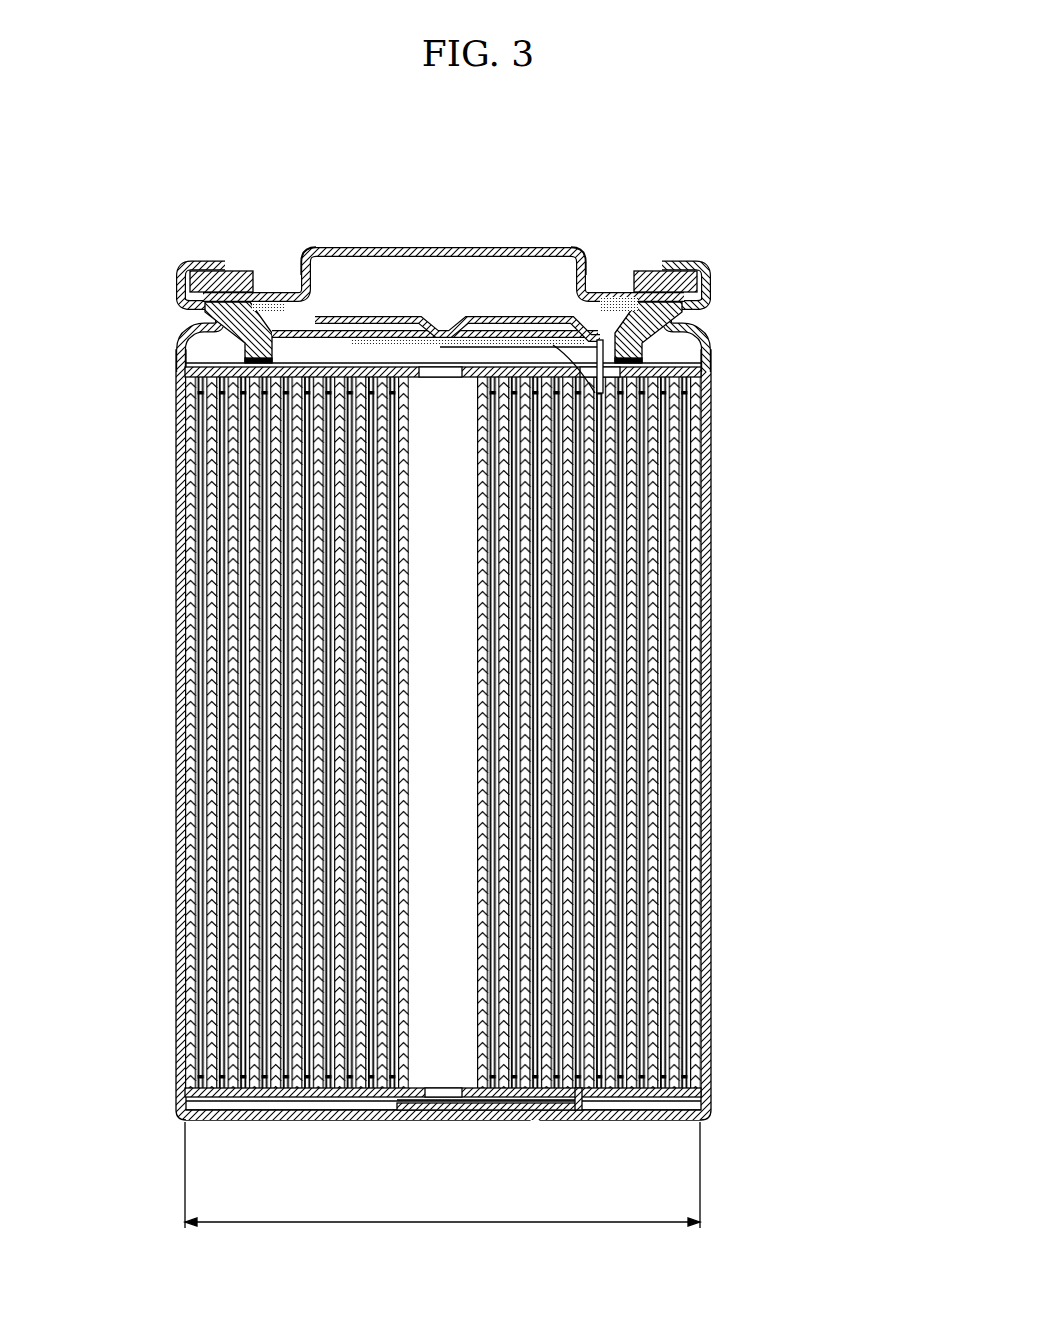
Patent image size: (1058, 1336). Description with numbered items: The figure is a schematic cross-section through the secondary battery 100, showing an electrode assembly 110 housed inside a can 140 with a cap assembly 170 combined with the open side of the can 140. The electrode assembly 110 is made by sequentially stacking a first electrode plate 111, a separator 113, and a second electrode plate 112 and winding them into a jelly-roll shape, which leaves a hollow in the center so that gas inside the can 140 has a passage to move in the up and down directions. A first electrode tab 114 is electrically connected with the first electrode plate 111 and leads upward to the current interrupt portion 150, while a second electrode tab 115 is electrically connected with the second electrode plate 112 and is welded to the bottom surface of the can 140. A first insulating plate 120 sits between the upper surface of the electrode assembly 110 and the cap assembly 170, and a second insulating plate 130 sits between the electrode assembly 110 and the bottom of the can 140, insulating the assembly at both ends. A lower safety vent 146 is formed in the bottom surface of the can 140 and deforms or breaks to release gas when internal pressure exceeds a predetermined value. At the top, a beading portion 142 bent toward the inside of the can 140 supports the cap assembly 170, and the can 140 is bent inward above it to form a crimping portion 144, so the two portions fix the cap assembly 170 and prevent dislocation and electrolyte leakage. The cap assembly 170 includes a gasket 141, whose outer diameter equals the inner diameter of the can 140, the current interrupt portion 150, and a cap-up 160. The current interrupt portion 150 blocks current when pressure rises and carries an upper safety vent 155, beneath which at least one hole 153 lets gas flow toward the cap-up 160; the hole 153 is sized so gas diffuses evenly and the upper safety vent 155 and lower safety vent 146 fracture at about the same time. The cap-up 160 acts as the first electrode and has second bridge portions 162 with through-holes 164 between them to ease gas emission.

The secondary battery 100 is at (783, 157).
The electrode assembly 110 is at (512, 732).
The first electrode plate 111 is at (683, 441).
The second electrode plate 112 is at (643, 541).
The separator 113 is at (482, 732).
The first electrode tab 114 is at (600, 393).
The second electrode tab 115 is at (436, 1123).
The first insulating plate 120 is at (703, 372).
The second insulating plate 130 is at (706, 1093).
The can 140 is at (456, 693).
The gasket 141 is at (190, 291).
The beading portion 142 is at (190, 328).
The crimping portion 144 is at (203, 262).
The lower safety vent 146 is at (537, 1123).
The current interrupt portion 150 is at (491, 298).
The hole 153 is at (341, 331).
The upper safety vent 155 is at (555, 318).
The cap-up 160 is at (443, 242).
The second bridge portions 162 is at (302, 264).
The through-holes 164 is at (590, 264).
The cap assembly 170 is at (632, 240).